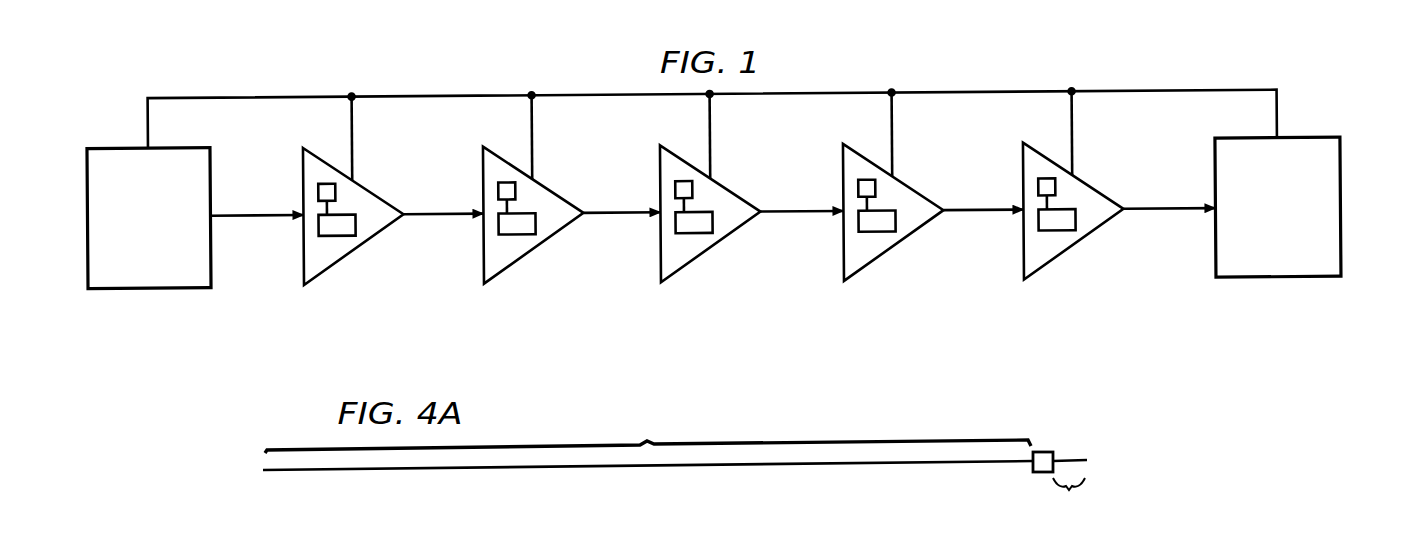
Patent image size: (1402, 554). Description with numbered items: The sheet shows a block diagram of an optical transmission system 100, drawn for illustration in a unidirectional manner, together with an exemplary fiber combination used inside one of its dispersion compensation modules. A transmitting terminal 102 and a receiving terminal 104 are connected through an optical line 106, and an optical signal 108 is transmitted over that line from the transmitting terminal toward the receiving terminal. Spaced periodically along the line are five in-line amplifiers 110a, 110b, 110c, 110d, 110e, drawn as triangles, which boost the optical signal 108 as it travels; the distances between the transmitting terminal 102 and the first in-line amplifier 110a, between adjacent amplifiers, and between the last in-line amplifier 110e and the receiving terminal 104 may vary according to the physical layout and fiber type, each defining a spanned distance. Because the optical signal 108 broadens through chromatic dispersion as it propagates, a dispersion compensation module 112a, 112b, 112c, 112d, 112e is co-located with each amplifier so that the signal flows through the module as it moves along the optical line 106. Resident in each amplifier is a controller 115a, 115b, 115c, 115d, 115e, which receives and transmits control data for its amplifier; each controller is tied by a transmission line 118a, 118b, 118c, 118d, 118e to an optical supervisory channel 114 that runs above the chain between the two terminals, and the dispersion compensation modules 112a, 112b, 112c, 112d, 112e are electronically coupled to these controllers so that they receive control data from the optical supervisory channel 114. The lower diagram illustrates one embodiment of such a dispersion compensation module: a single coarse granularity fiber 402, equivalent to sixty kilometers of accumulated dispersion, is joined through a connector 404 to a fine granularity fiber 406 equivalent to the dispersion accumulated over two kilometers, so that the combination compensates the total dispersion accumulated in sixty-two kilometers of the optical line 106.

In FIG. 1, the optical transmission system 100 is at (1331, 108).
In FIG. 1, the transmitting terminal 102 is at (131, 251).
In FIG. 1, the receiving terminal 104 is at (1259, 249).
In FIG. 1, the optical line 106 is at (1168, 214).
In FIG. 1, the optical signal 108 is at (253, 214).
In FIG. 1, the in-line amplifier 110a is at (298, 259).
In FIG. 1, the in-line amplifier 110b is at (480, 237).
In FIG. 1, the in-line amplifier 110c is at (657, 237).
In FIG. 1, the in-line amplifier 110d is at (840, 237).
In FIG. 1, the in-line amplifier 110e is at (1020, 237).
In FIG. 1, the dispersion compensation module 112a is at (343, 233).
In FIG. 1, the dispersion compensation module 112b is at (523, 233).
In FIG. 1, the dispersion compensation module 112c is at (700, 233).
In FIG. 1, the dispersion compensation module 112d is at (883, 233).
In FIG. 1, the dispersion compensation module 112e is at (1063, 233).
In FIG. 1, the optical supervisory channel 114 is at (478, 94).
In FIG. 1, the controller 115a is at (318, 192).
In FIG. 1, the controller 115b is at (498, 192).
In FIG. 1, the controller 115c is at (675, 192).
In FIG. 1, the controller 115d is at (858, 192).
In FIG. 1, the controller 115e is at (1038, 192).
In FIG. 1, the transmission line 118a is at (352, 130).
In FIG. 1, the transmission line 118b is at (532, 129).
In FIG. 1, the transmission line 118c is at (710, 129).
In FIG. 1, the transmission line 118d is at (892, 128).
In FIG. 1, the transmission line 118e is at (1072, 128).
In FIG. 4A, the coarse granularity fiber 402 is at (617, 468).
In FIG. 4A, the connector 404 is at (1045, 450).
In FIG. 4A, the fine granularity fiber 406 is at (1073, 458).